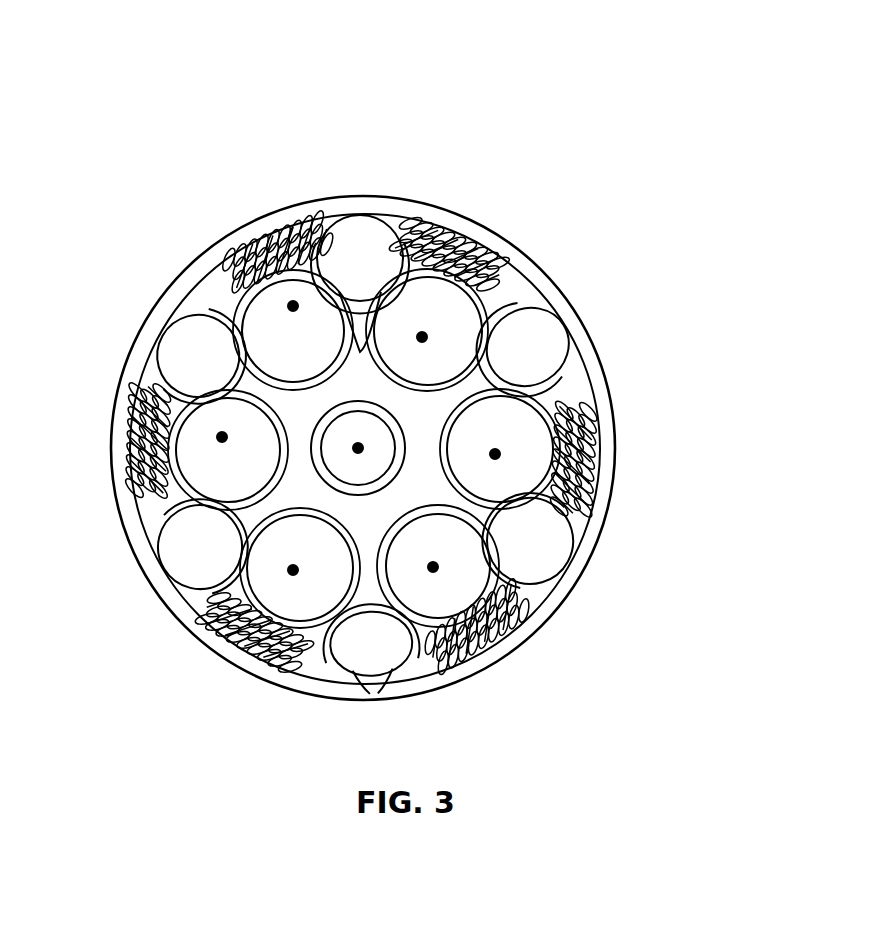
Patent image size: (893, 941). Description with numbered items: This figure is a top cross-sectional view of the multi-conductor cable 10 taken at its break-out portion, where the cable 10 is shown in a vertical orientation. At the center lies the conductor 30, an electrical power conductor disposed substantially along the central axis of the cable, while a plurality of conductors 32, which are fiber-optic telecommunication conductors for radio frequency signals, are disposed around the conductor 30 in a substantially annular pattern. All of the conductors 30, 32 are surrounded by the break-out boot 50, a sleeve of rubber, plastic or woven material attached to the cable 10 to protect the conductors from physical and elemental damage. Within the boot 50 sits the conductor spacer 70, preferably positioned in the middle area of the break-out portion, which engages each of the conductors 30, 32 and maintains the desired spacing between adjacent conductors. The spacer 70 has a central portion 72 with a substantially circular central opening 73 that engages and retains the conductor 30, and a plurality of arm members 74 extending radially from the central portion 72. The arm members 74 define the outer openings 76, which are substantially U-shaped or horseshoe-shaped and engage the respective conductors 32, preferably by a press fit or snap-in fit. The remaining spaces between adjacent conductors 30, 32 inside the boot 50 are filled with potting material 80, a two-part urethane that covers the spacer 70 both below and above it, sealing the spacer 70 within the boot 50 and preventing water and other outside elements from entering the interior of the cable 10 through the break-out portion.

The multi-conductor cable 10 is at (458, 122).
The conductor 30 is at (358, 448).
The conductors 32 is at (358, 444).
The break-out boot 50 is at (608, 380).
The conductor spacer 70 is at (360, 204).
The central portion 72 is at (307, 427).
The central opening 73 is at (331, 428).
The arm members 74 is at (565, 540).
The outer openings 76 is at (438, 453).
The potting material 80 is at (417, 445).